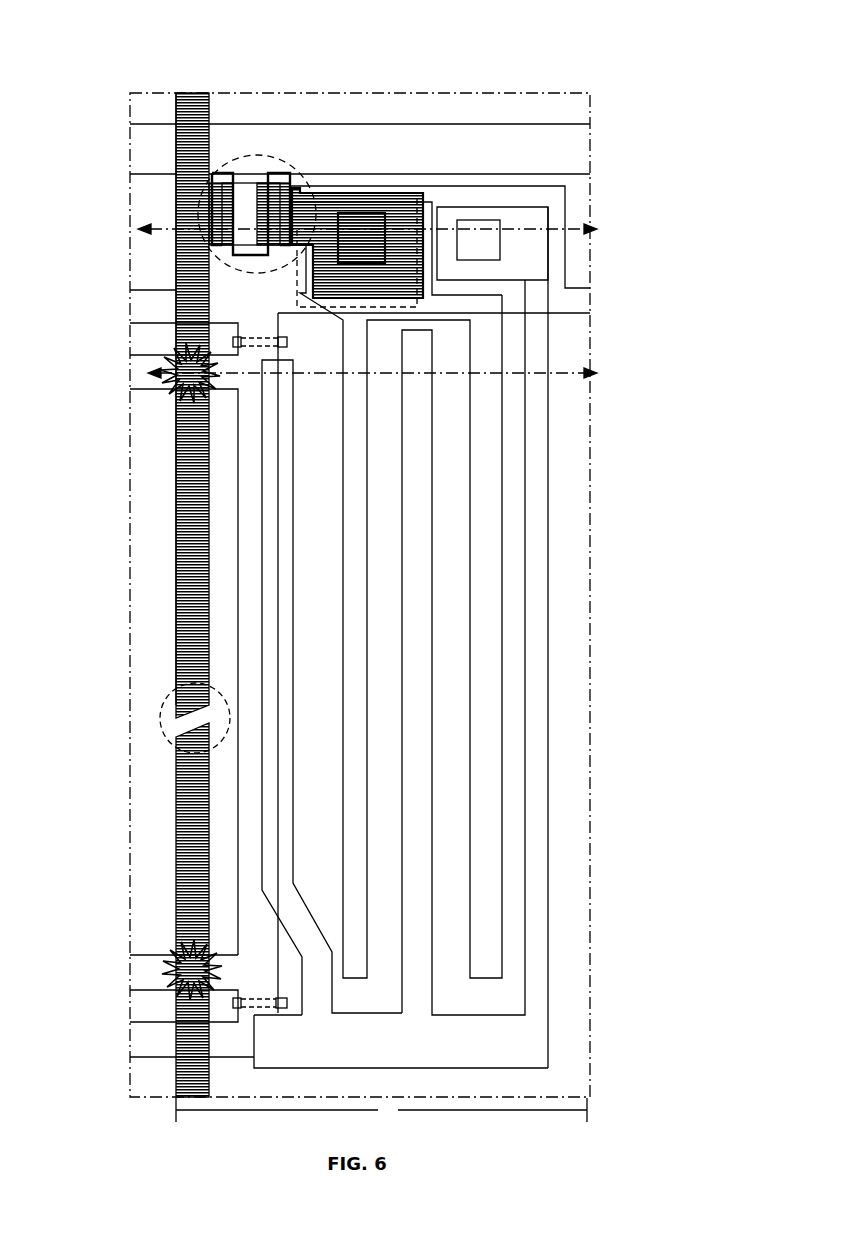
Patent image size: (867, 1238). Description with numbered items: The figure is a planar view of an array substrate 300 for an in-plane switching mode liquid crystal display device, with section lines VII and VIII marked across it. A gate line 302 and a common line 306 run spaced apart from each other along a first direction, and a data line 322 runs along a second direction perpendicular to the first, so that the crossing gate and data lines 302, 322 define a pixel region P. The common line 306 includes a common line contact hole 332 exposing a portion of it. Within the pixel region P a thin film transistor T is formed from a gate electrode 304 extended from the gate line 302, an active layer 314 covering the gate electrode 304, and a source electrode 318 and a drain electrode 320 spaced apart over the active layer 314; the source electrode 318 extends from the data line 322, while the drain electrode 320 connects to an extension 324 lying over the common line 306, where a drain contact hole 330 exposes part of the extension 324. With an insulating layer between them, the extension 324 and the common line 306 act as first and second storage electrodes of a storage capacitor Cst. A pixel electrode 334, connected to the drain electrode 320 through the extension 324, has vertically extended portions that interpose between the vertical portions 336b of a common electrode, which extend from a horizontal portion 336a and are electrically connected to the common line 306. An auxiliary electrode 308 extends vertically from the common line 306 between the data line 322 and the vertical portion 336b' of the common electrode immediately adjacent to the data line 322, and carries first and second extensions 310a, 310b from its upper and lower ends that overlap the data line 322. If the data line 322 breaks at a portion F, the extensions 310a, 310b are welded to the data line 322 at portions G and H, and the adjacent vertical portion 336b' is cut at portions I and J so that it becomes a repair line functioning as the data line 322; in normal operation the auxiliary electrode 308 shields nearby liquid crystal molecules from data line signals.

The array substrate 300 is at (592, 790).
The gate line 302 is at (507, 124).
The gate electrode 304 is at (248, 263).
The common line 306 is at (567, 203).
The auxiliary electrode 308 is at (212, 636).
The first extension 310a is at (165, 372).
The second extension 310b is at (153, 990).
The active layer 314 is at (255, 177).
The source electrode 318 is at (238, 200).
The drain electrode 320 is at (275, 197).
The data line 322 is at (176, 560).
The extension 324 is at (397, 193).
The drain contact hole 330 is at (387, 247).
The common line contact hole 332 is at (488, 243).
The pixel electrode 334 is at (368, 633).
The horizontal portion of common electrode 336a is at (525, 1055).
The vertical portions of common electrode 336b is at (541, 637).
The vertical portion of common electrode adjacent to data line 336b' is at (321, 664).
The storage capacitor Cst is at (340, 197).
The thin film transistor T is at (267, 268).
The cut portion I is at (289, 345).
The cut portion J is at (258, 996).
The breakage portion F is at (160, 720).
The welding portion G is at (170, 382).
The welding portion H is at (165, 970).
The pixel region P is at (381, 1110).
The section line VII- VII is at (364, 229).
The section line VIII- VIII is at (362, 373).